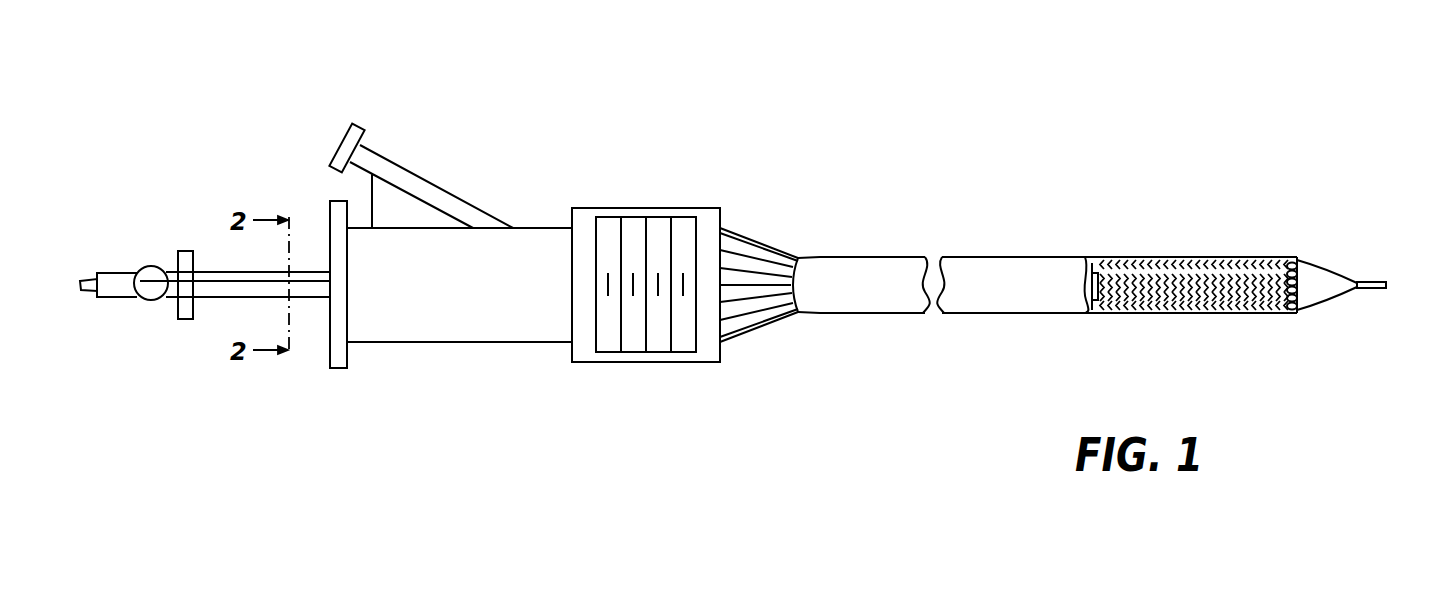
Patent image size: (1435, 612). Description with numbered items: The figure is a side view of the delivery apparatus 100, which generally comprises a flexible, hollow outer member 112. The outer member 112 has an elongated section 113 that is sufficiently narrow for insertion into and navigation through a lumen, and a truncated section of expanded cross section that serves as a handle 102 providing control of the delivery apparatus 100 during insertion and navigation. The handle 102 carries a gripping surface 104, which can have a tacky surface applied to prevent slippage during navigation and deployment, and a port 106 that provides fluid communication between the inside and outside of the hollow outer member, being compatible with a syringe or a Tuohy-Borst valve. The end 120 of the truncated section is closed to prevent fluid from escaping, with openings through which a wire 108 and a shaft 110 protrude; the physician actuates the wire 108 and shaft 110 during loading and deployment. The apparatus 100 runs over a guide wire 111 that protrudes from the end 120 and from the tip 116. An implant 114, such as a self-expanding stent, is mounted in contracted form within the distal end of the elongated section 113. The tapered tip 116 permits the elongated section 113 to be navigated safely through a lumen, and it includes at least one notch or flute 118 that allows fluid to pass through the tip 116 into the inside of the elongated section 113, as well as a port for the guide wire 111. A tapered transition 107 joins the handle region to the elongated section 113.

The delivery apparatus 100 is at (770, 134).
The handle 102 is at (470, 343).
The gripping surface 104 is at (648, 353).
The port 106 is at (343, 147).
The tapered transition / strain relief 107 is at (760, 235).
The wire 108 is at (205, 274).
The shaft 110 is at (169, 272).
The guide wire 111 is at (1365, 288).
The outer member 112 is at (753, 373).
The elongated section 113 is at (873, 257).
The implant 114 is at (1170, 257).
The tip 116 is at (1325, 270).
The flute 118 is at (1288, 262).
The end 120 is at (337, 368).